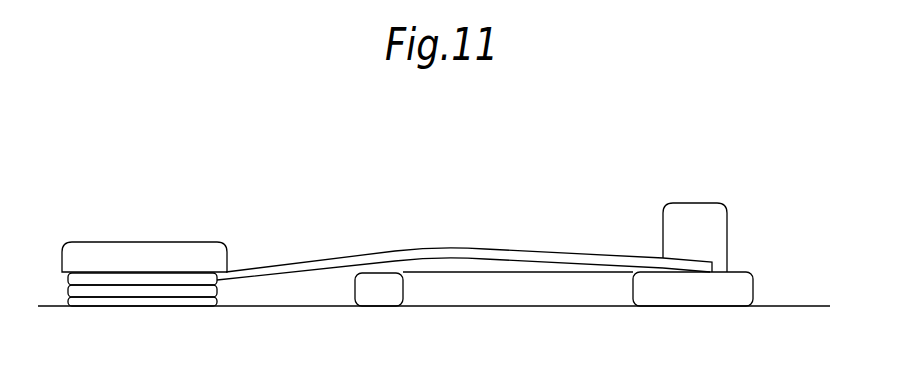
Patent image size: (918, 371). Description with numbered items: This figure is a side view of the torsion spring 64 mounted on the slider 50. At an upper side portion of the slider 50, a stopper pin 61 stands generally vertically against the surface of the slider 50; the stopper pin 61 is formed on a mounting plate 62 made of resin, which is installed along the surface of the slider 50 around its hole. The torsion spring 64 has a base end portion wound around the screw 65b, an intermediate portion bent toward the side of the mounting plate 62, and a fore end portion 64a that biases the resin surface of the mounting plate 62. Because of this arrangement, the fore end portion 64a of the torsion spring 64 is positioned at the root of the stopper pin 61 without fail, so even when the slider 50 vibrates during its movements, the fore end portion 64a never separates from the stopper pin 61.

The slider 50 is at (795, 304).
The stopper pin 61 is at (692, 202).
The mounting plate 62 is at (522, 287).
The torsion spring 64 is at (318, 258).
The fore end portion 64a is at (695, 258).
The screw 65b is at (143, 241).